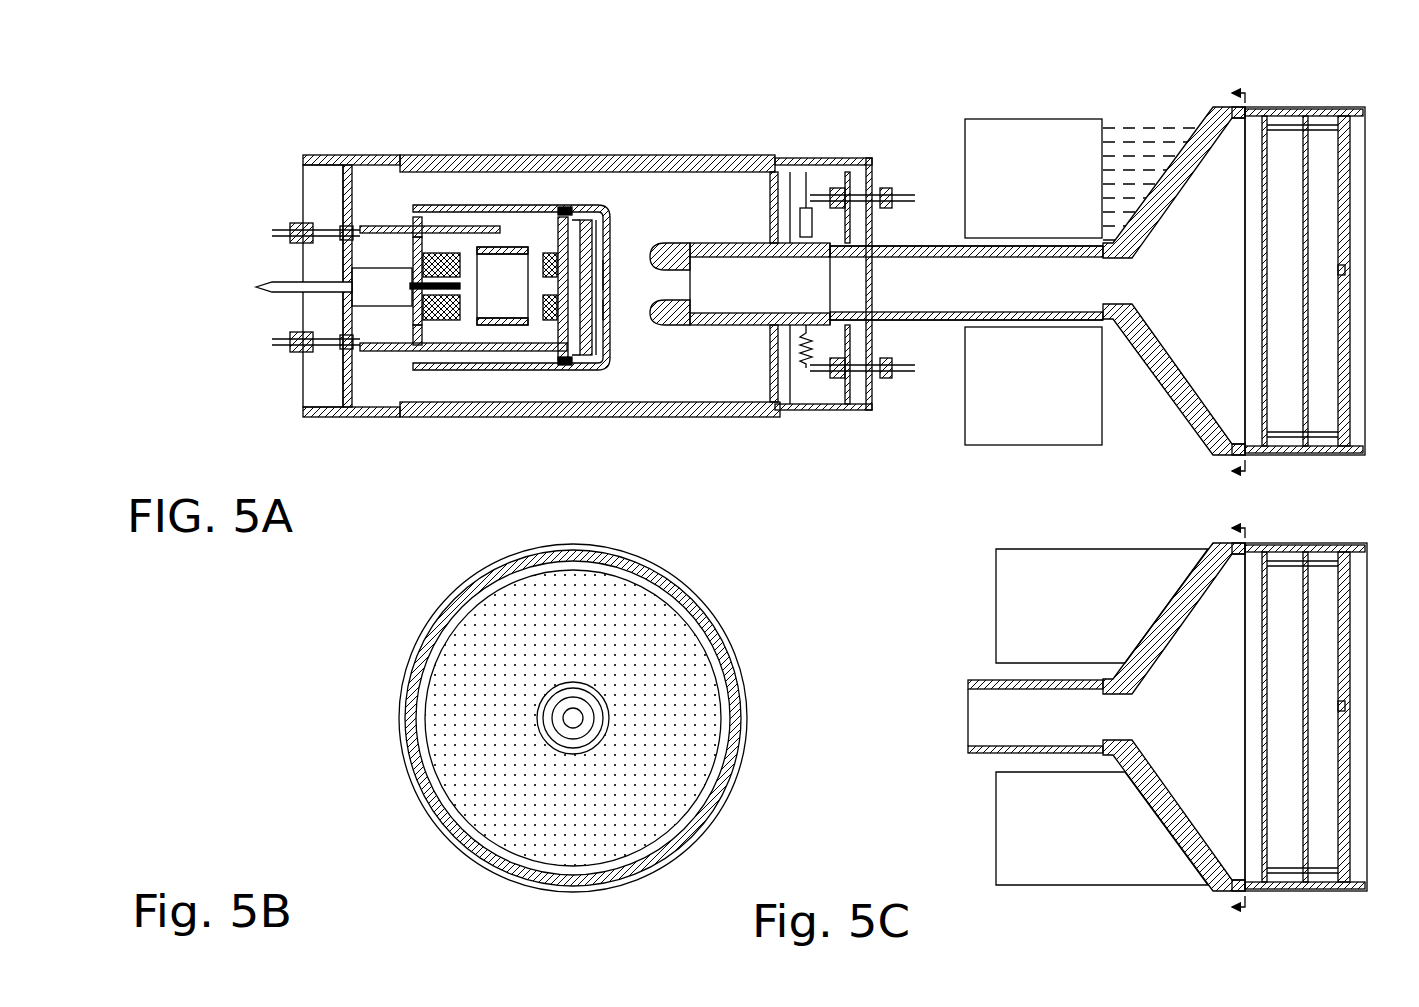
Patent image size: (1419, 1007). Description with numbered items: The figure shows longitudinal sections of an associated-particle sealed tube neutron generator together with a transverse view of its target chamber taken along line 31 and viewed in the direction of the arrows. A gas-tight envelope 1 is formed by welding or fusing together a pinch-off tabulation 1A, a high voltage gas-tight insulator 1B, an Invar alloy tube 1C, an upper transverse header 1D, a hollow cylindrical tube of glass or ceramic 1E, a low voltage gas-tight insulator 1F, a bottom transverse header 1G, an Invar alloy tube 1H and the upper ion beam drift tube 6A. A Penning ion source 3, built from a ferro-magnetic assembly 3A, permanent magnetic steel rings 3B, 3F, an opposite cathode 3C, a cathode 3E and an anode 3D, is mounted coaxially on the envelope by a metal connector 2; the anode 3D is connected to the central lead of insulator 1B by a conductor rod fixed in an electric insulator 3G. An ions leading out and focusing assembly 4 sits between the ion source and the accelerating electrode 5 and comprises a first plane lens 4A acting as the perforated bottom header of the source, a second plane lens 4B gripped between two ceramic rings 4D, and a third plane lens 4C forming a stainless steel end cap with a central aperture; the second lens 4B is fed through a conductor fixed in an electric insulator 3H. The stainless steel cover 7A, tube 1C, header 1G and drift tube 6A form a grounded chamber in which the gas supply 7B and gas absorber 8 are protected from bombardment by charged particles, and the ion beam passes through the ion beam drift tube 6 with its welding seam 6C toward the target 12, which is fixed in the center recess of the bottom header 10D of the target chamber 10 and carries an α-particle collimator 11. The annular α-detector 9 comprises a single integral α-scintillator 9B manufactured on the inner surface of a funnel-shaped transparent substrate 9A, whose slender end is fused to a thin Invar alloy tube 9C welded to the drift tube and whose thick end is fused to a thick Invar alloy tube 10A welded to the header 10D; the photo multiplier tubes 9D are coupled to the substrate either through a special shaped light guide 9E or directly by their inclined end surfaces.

In FIG. 5A, the gas-tight envelope 1 is at (688, 150).
In FIG. 5A, the pinch-off tabulation 1A is at (262, 285).
In FIG. 5A, the high voltage gas-tight insulator 1B is at (290, 345).
In FIG. 5A, the Invar alloy tube 1C is at (305, 157).
In FIG. 5A, the upper transverse header 1D is at (345, 397).
In FIG. 5A, the hollow cylindrical tube of glass or ceramic 1E is at (410, 158).
In FIG. 5A, the low voltage gas-tight insulator 1F is at (890, 192).
In FIG. 5A, the bottom transverse header 1G is at (847, 407).
In FIG. 5A, the Invar alloy tube 1H is at (783, 168).
In FIG. 5A, the metal connector 2 is at (406, 287).
In FIG. 5A, the Penning ion source 3 is at (502, 286).
In FIG. 5A, the ferro-magnetic assembly 3A is at (428, 365).
In FIG. 5A, the permanent magnetic steel ring 3B is at (420, 330).
In FIG. 5A, the opposite cathode 3C is at (445, 255).
In FIG. 5A, the anode 3D is at (495, 325).
In FIG. 5A, the cathode 3E is at (552, 253).
In FIG. 5A, the permanent magnetic steel ring 3F is at (552, 320).
In FIG. 5A, the electric insulator 3G is at (415, 207).
In FIG. 5A, the electric insulator 3H is at (425, 367).
In FIG. 5A, the ions leading out and focusing assembly 4 is at (597, 287).
In FIG. 5A, the first plane lens 4A is at (565, 235).
In FIG. 5A, the second plane lens 4B is at (606, 305).
In FIG. 5A, the third plane lens 4C is at (605, 280).
In FIG. 5B, the third plane lens 4C is at (568, 726).
In FIG. 5A, the ceramic rings 4D is at (586, 355).
In FIG. 5A, the accelerating electrode 5 is at (668, 320).
In FIG. 5B, the accelerating electrode 5 is at (598, 737).
In FIG. 5A, the ion beam drift tube 6 is at (966, 283).
In FIG. 5A, the upper ion beam drift tube 6A is at (972, 247).
In FIG. 5A, the welding seam 6C is at (962, 302).
In FIG. 5A, the stainless steel cover 7A is at (773, 348).
In FIG. 5A, the gas supply 7B is at (802, 362).
In FIG. 5A, the gas absorber 8 is at (801, 208).
In FIG. 5A, the α-detector 9 is at (1198, 281).
In FIG. 5C, the α-detector 9 is at (1212, 717).
In FIG. 5A, the transparent substrate for α-scintillator 9A is at (1192, 134).
In FIG. 5B, the transparent substrate for α-scintillator 9A is at (512, 870).
In FIG. 5C, the transparent substrate for α-scintillator 9A is at (1192, 570).
In FIG. 5A, the α-scintillator 9B is at (1212, 140).
In FIG. 5B, the α-scintillator 9B is at (580, 832).
In FIG. 5C, the α-scintillator 9B is at (1212, 577).
In FIG. 5A, the thin Invar alloy tube 9C is at (1060, 316).
In FIG. 5C, the thin Invar alloy tube 9C is at (990, 755).
In FIG. 5A, the photo multiplier tube 9D is at (1058, 133).
In FIG. 5C, the photo multiplier tube 9D is at (1058, 567).
In FIG. 5A, the light guide 9E is at (1132, 138).
In FIG. 5A, the target chamber 10 is at (1322, 110).
In FIG. 5C, the target chamber 10 is at (1322, 546).
In FIG. 5A, the thick Invar alloy tube 10A is at (1264, 447).
In FIG. 5B, the thick Invar alloy tube 10A is at (463, 848).
In FIG. 5C, the thick Invar alloy tube 10A is at (1284, 884).
In FIG. 5A, the bottom header of target chamber 10D is at (1350, 395).
In FIG. 5C, the bottom header of target chamber 10D is at (1355, 830).
In FIG. 5A, the α-particle collimator 11 is at (1312, 123).
In FIG. 5C, the α-particle collimator 11 is at (1312, 559).
In FIG. 5A, the target 12 is at (1340, 280).
In FIG. 5C, the target 12 is at (1342, 706).
In FIG. 5A, the section line 31 is at (1220, 283).
In FIG. 5B, the section line 31 is at (303, 705).
In FIG. 5C, the section line 31 is at (1221, 718).